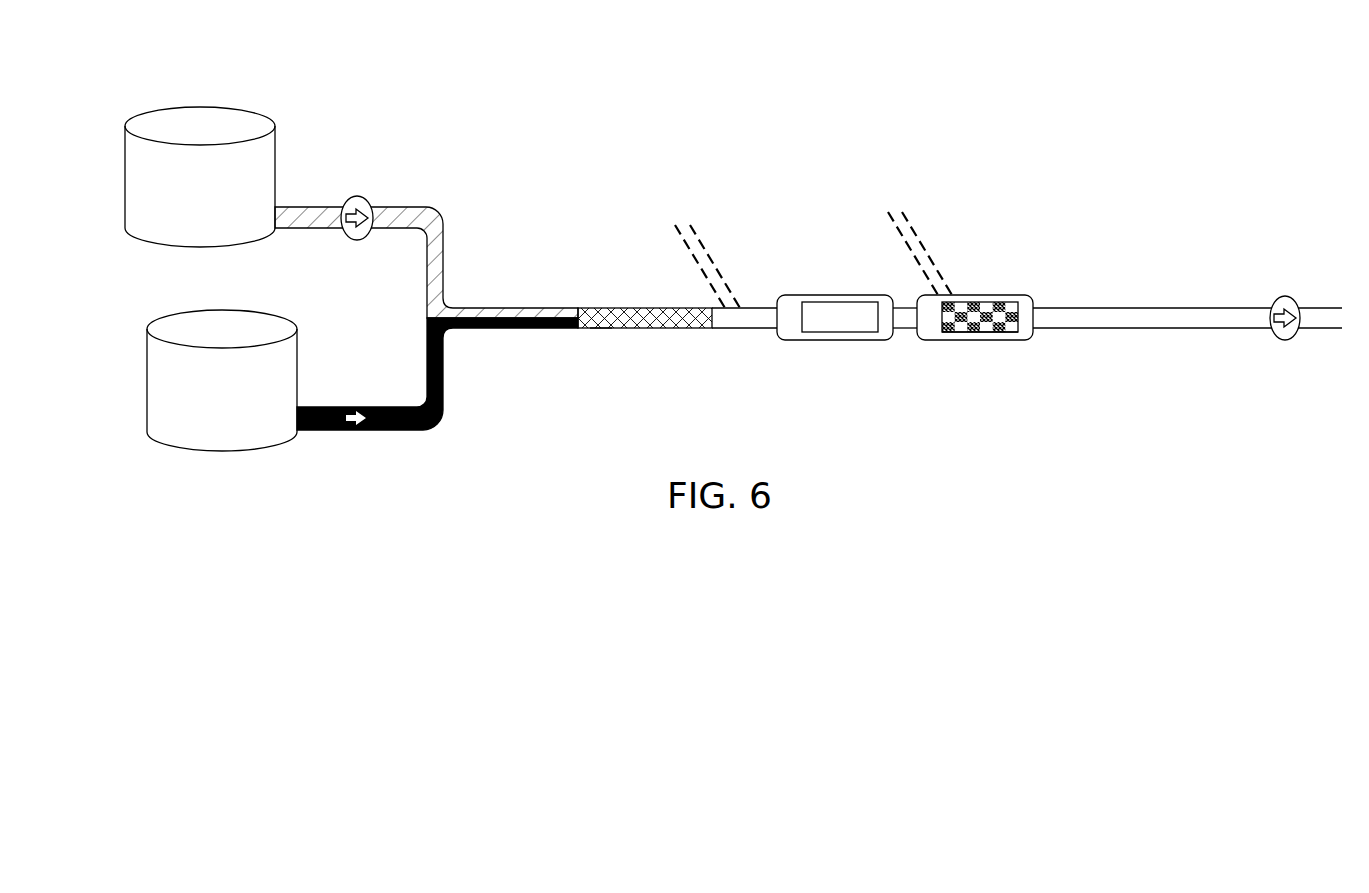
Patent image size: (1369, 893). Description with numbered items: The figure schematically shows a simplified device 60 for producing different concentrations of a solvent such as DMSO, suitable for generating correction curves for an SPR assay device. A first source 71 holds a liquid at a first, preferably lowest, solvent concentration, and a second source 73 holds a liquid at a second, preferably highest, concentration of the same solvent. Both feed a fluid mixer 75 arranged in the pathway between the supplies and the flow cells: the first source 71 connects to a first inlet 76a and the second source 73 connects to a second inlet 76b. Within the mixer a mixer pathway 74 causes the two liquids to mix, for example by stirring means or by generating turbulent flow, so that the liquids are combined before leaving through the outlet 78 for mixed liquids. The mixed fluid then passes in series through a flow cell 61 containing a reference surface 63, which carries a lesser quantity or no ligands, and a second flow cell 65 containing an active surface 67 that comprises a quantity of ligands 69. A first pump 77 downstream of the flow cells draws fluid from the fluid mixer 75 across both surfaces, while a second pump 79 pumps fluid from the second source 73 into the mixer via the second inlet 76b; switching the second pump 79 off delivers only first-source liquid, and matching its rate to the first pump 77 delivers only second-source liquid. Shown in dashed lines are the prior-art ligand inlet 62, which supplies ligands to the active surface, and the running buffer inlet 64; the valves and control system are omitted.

The device 60 is at (701, 279).
The flow cell 61 is at (830, 293).
The ligand inlet 62 is at (926, 243).
The reference surface 63 is at (832, 320).
The running buffer inlet 64 is at (714, 252).
The second flow cell 65 is at (988, 298).
The active surface 67 is at (982, 335).
The ligands 69 is at (1000, 297).
The first source 71 is at (145, 372).
The second source 73 is at (122, 170).
The mixer pathway 74 is at (620, 305).
The fluid mixer 75 is at (600, 331).
The first inlet 76a is at (512, 333).
The second inlet 76b is at (512, 305).
The first pump 77 is at (1282, 343).
The outlet 78 is at (730, 333).
The second pump 79 is at (356, 196).